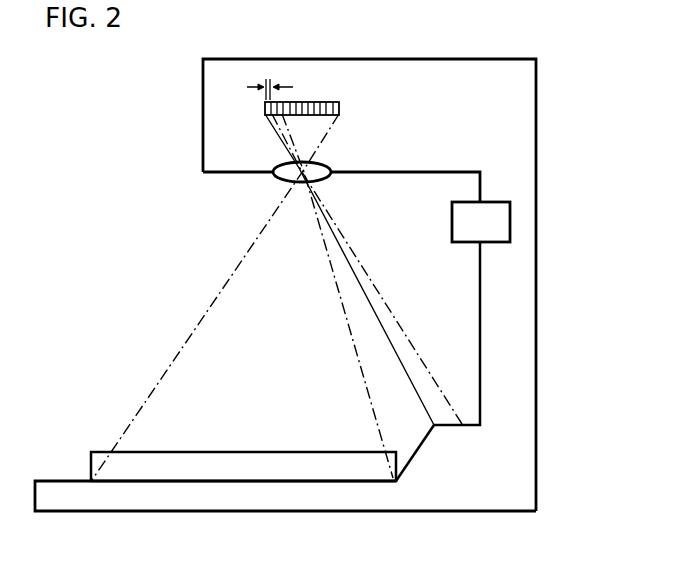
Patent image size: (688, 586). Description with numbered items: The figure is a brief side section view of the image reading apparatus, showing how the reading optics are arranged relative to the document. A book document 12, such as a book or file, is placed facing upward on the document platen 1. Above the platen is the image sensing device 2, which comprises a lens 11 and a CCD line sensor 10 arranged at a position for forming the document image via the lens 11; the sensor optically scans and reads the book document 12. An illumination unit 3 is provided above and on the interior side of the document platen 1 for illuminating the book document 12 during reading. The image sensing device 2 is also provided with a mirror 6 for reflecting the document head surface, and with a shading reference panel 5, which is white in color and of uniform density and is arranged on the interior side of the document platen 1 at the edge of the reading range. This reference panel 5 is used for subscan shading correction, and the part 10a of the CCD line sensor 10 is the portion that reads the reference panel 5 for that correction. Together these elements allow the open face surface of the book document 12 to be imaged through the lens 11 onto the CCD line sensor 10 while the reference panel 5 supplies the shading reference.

The document platen 1 is at (65, 480).
The image sensing device 2 is at (247, 68).
The illumination unit 3 is at (493, 210).
The shading reference panel 5 is at (470, 427).
The mirror 6 is at (418, 457).
The CCD line sensor 10 is at (339, 103).
The part of CCD line sensor 10a is at (270, 98).
The lens 11 is at (277, 183).
The book document 12 is at (98, 452).